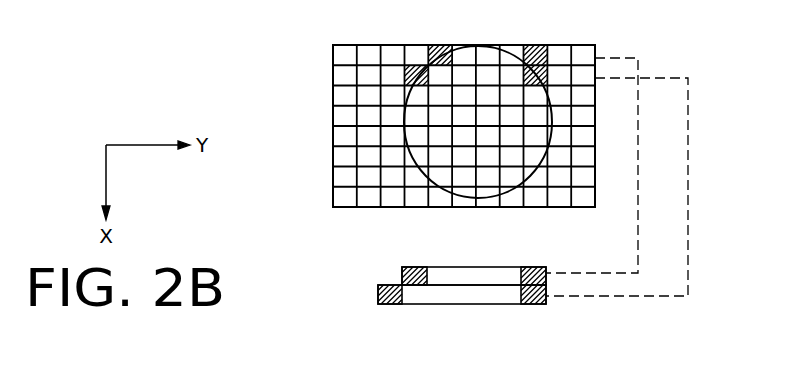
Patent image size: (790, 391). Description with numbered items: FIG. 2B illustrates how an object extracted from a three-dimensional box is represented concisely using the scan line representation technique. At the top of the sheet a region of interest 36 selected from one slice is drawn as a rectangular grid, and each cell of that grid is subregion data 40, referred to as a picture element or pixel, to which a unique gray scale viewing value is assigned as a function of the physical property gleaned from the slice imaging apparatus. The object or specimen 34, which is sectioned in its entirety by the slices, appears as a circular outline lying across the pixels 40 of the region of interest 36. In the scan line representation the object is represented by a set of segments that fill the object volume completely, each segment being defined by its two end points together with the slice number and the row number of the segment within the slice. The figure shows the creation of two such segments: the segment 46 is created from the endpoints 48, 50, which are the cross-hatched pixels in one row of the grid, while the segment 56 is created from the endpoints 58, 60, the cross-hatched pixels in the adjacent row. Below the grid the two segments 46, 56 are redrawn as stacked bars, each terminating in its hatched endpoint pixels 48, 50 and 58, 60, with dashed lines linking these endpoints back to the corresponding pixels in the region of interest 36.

The object or specimen 34 is at (423, 180).
The region of interest 36 is at (333, 77).
The subregion data (pixel) 40 is at (333, 157).
The segment 46 is at (445, 267).
The endpoint (pixel) 48 is at (443, 46).
The endpoint (pixel) 50 is at (536, 52).
The segment 56 is at (433, 305).
The endpoint 58 is at (415, 70).
The endpoint 60 is at (550, 65).